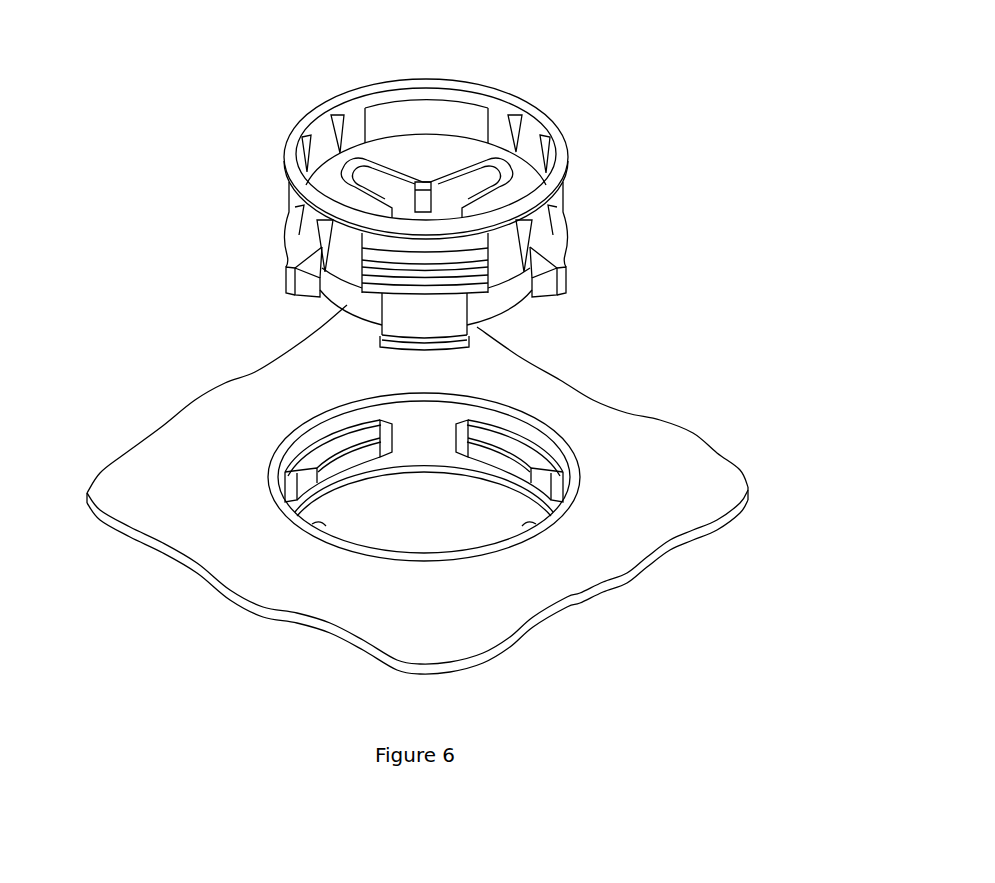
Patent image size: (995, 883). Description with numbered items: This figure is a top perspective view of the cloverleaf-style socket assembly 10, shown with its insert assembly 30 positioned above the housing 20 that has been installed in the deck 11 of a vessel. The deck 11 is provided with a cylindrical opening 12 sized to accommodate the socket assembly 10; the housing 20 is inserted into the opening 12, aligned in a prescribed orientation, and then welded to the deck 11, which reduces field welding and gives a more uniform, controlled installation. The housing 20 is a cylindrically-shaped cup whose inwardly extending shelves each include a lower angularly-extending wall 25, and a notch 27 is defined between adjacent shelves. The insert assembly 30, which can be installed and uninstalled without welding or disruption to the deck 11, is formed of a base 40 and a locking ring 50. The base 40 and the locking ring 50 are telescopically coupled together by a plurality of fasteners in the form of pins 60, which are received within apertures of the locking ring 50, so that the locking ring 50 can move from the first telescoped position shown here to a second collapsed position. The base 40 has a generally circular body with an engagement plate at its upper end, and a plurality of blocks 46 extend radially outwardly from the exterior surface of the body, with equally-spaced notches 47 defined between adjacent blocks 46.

The socket assembly 10 is at (788, 0).
The deck 11 is at (195, 455).
The cylindrical opening 12 is at (293, 500).
The housing 20 is at (395, 529).
The lower angularly-extending wall 25 is at (375, 455).
The notch 27 is at (430, 430).
The insert assembly 30 is at (242, 278).
The base 40 is at (418, 153).
The blocks 46 is at (285, 283).
The notches 47 is at (347, 318).
The locking ring 50 is at (547, 103).
The pins 60 is at (567, 246).